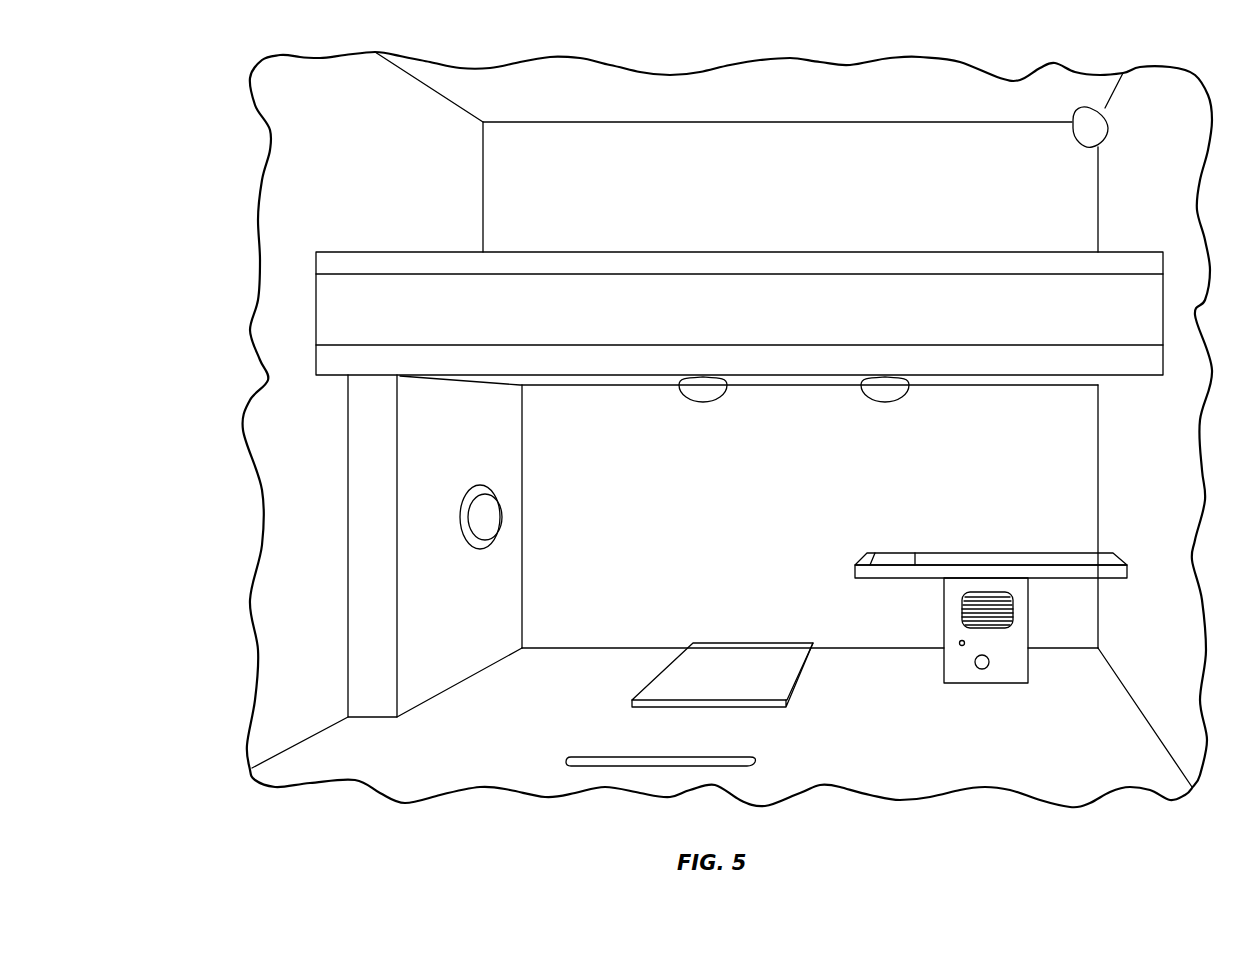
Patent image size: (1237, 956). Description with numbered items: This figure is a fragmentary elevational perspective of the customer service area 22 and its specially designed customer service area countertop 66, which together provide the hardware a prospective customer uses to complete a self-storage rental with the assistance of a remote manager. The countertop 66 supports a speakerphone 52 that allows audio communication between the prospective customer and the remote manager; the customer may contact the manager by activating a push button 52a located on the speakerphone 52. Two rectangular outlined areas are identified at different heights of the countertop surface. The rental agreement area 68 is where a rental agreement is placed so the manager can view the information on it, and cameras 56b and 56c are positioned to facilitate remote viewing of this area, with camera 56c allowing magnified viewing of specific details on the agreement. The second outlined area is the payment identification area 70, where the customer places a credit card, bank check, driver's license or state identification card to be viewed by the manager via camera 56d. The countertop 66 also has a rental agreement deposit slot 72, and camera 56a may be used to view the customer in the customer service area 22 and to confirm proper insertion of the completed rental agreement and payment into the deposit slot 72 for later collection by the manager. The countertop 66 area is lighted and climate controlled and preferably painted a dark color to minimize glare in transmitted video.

The customer service area 22 is at (232, 529).
The camera 56a is at (1085, 136).
The camera 56b is at (497, 522).
The camera 56c is at (702, 402).
The camera 56d is at (884, 402).
The customer service area countertop 66 is at (990, 562).
The payment identification area 70 is at (893, 556).
The speakerphone 52 is at (952, 657).
The push button 52a is at (983, 666).
The rental agreement area 68 is at (670, 683).
The rental agreement deposit slot 72 is at (605, 755).